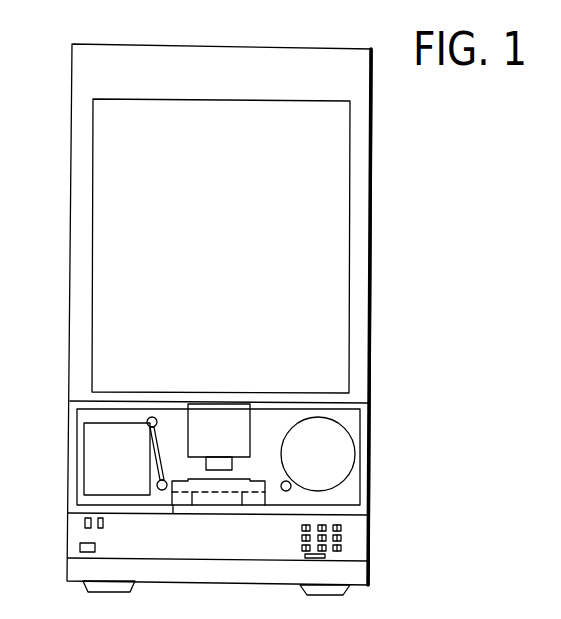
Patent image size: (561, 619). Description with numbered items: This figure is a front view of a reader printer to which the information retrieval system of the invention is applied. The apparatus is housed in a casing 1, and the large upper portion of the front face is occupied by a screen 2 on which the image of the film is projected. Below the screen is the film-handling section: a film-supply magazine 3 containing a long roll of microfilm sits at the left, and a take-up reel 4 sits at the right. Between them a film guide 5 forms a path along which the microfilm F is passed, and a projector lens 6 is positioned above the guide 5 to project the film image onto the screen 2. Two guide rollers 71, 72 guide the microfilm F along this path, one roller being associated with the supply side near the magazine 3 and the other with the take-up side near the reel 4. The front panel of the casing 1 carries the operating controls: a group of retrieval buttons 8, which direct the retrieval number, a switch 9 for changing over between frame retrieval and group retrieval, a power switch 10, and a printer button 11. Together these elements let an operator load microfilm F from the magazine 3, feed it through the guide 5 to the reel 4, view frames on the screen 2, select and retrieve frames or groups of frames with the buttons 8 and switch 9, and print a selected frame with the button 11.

The casing 1 is at (70, 234).
The screen 2 is at (348, 201).
The film-supply magazine 3 is at (84, 452).
The take-up reel 4 is at (355, 445).
The film guide 5 is at (212, 485).
The projector lens 6 is at (232, 463).
The group of retrieval buttons 8 is at (341, 533).
The switch 9 is at (305, 556).
The power switch 10 is at (80, 548).
The printer button 11 is at (82, 521).
The guide roller 71 is at (157, 485).
The guide roller 72 is at (289, 481).
The microfilm F is at (167, 444).